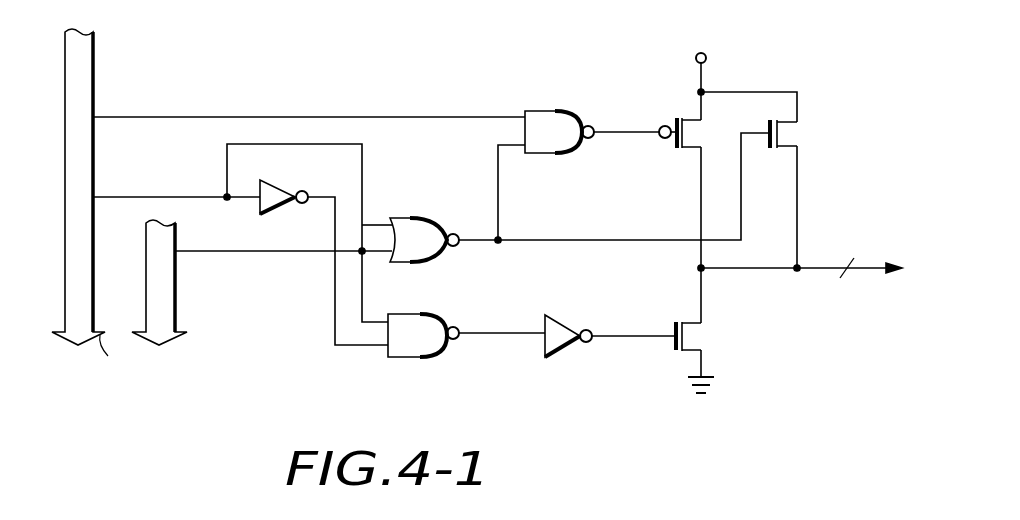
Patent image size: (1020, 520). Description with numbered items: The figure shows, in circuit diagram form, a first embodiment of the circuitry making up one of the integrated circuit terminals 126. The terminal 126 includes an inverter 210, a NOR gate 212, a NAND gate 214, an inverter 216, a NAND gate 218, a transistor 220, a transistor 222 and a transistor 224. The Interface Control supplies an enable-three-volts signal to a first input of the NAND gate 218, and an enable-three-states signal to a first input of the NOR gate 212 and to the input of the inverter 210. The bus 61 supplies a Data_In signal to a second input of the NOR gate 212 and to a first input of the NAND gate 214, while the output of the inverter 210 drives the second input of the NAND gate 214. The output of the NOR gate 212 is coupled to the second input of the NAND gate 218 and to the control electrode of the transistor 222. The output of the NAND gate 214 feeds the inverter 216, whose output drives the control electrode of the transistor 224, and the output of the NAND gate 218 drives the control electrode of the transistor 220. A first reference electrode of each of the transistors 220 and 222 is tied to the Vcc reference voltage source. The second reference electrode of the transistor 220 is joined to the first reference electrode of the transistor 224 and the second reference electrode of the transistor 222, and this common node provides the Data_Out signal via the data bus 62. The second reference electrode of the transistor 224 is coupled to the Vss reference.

The integrated circuit terminal 126 is at (812, 37).
The bus 61 is at (177, 340).
The data bus 62 is at (866, 267).
The inverter 210 is at (275, 191).
The NOR gate 212 is at (410, 219).
The NAND gate 214 is at (410, 315).
The inverter 216 is at (567, 348).
The NAND gate 218 is at (545, 111).
The transistor 220 is at (676, 151).
The transistor 222 is at (771, 150).
The transistor 224 is at (676, 320).